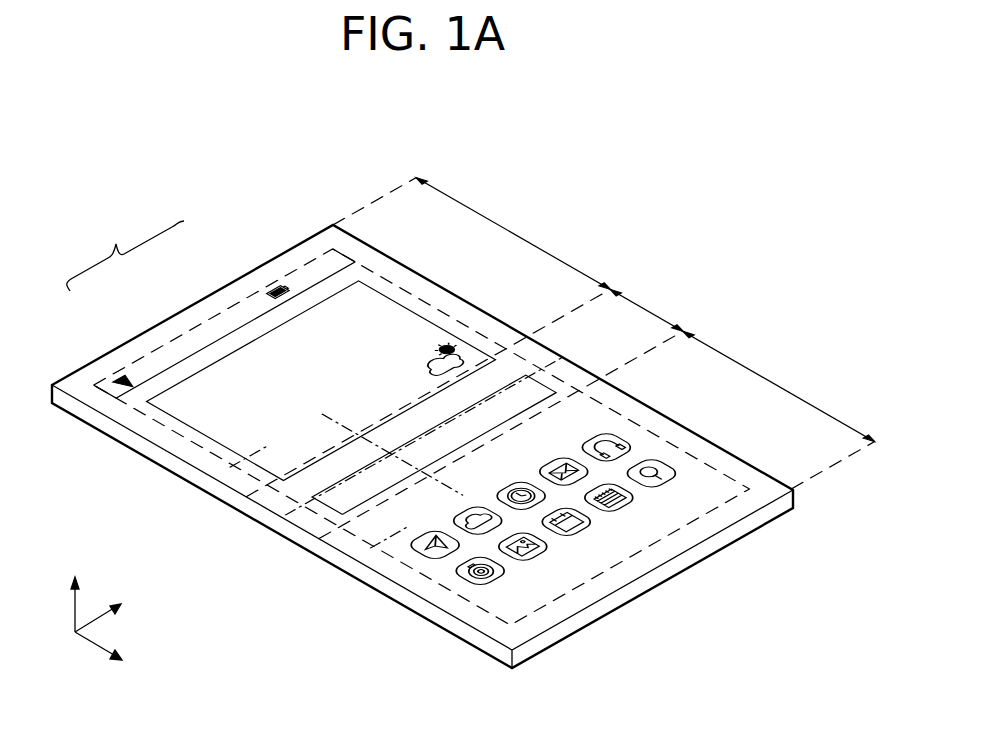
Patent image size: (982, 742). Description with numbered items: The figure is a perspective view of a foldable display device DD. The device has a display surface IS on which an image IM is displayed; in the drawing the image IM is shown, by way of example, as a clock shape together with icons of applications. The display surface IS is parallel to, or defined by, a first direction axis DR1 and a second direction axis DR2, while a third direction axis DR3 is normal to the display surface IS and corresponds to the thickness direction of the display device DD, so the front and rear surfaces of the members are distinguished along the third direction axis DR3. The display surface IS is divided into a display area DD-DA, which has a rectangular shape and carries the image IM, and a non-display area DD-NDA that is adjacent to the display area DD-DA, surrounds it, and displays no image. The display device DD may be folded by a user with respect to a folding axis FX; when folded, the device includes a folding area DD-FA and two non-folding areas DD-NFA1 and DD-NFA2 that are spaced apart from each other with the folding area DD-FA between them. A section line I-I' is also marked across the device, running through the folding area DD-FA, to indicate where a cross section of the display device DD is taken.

The display device DD is at (688, 205).
The non-display area DD-NDA is at (137, 352).
The display area DD-DA is at (208, 317).
The image IM is at (415, 313).
The folding area DD-FA is at (476, 411).
The first non-folding area DD-NFA1 is at (473, 256).
The second non-folding area DD-NFA2 is at (739, 409).
The folding axis FX is at (297, 507).
The section line I is at (346, 480).
The section line I' is at (418, 521).
The display surface IS is at (125, 254).
The first direction axis DR1 is at (122, 609).
The second direction axis DR2 is at (123, 655).
The third direction axis DR3 is at (71, 590).